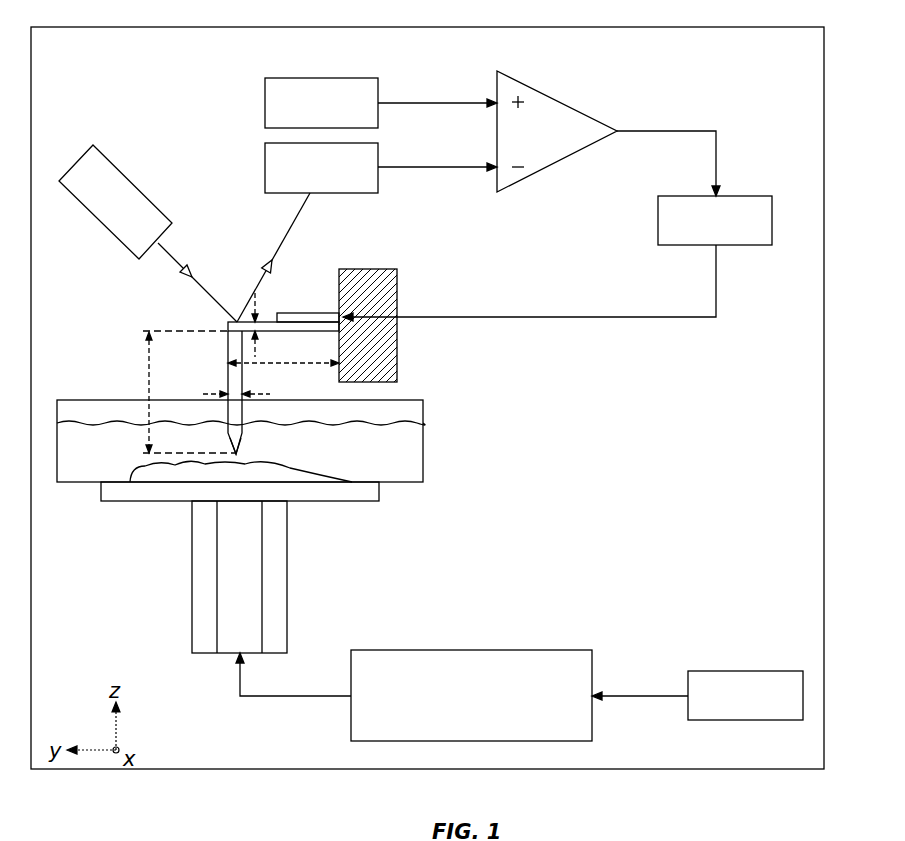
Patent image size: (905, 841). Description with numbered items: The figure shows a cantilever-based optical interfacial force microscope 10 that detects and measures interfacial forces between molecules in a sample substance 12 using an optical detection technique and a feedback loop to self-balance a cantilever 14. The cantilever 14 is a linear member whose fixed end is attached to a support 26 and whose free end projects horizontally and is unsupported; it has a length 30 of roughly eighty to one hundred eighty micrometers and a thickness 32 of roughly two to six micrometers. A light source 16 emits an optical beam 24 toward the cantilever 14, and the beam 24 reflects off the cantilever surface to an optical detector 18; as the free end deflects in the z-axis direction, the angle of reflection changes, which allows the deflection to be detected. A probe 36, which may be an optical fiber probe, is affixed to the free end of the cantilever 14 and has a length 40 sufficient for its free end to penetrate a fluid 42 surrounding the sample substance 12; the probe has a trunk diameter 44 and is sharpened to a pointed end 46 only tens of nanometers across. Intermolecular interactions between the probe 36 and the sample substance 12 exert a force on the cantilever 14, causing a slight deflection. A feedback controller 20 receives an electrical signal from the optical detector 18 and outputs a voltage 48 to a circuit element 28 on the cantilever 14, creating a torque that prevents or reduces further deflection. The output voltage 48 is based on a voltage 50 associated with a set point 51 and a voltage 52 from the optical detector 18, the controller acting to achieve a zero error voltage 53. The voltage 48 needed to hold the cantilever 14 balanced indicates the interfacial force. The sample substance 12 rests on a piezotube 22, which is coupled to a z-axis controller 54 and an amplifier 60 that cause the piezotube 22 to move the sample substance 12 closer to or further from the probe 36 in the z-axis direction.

The cantilever-based optical interfacial force microscope (COIFM) 10 is at (757, 27).
The sample substance 12 is at (302, 478).
The cantilever 14 is at (262, 322).
The light source 16 is at (126, 216).
The optical detector 18 is at (334, 179).
The feedback controller 20 is at (728, 232).
The piezotube 22 is at (287, 601).
The optical beam 24 is at (172, 257).
The support 26 is at (406, 252).
The circuit element 28 is at (300, 313).
The length 30 is at (280, 366).
The thickness 32 is at (258, 352).
The probe 36 is at (229, 376).
The length 40 is at (149, 368).
The fluid 42 is at (412, 455).
The trunk diameter 44 is at (215, 392).
The pointed end 46 is at (237, 454).
The voltage 48 is at (533, 317).
The voltage 50 is at (416, 103).
The set point 51 is at (334, 114).
The voltage 52 is at (416, 167).
The zero error voltage 53 is at (665, 131).
The z-axis controller 54 is at (758, 706).
The amplifier 60 is at (484, 707).